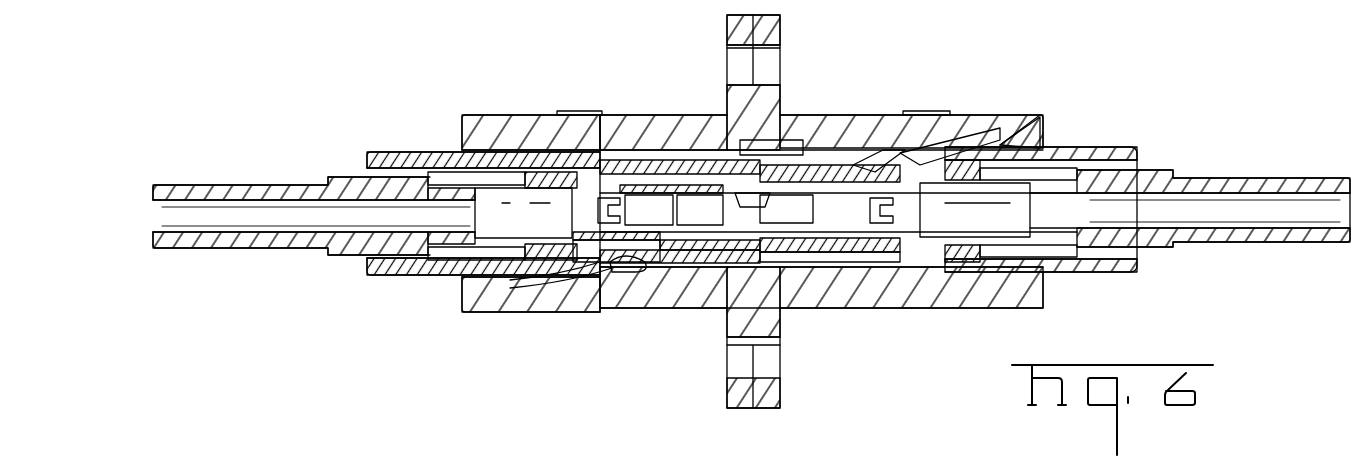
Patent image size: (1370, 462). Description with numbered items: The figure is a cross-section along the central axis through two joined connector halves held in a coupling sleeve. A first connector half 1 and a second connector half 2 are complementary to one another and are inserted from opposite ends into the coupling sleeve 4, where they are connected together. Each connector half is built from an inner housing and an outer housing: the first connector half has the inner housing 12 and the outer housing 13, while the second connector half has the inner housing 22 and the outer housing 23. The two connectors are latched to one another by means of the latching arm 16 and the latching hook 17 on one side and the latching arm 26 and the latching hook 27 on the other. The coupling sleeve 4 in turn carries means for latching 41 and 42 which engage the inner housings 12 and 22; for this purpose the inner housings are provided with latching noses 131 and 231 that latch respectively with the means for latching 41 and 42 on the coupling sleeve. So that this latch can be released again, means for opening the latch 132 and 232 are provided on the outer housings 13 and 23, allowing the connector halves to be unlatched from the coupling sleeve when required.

The first connector half 1 is at (375, 138).
The second connector half 2 is at (1237, 163).
The coupling sleeve 4 is at (797, 40).
The inner housing 12 is at (607, 173).
The outer housing 13 is at (430, 152).
The latching arm 16 is at (690, 165).
The latching hook 17 is at (787, 262).
The inner housing 22 is at (830, 172).
The outer housing 23 is at (1103, 147).
The latching arm 26 is at (805, 263).
The latching hook 27 is at (725, 175).
The means for latching 41 is at (1037, 113).
The means for latching 42 is at (610, 272).
The latching nose 131 is at (625, 262).
The means for opening the latch 132 is at (647, 262).
The latching nose 231 is at (950, 135).
The means for opening the latch 232 is at (868, 157).